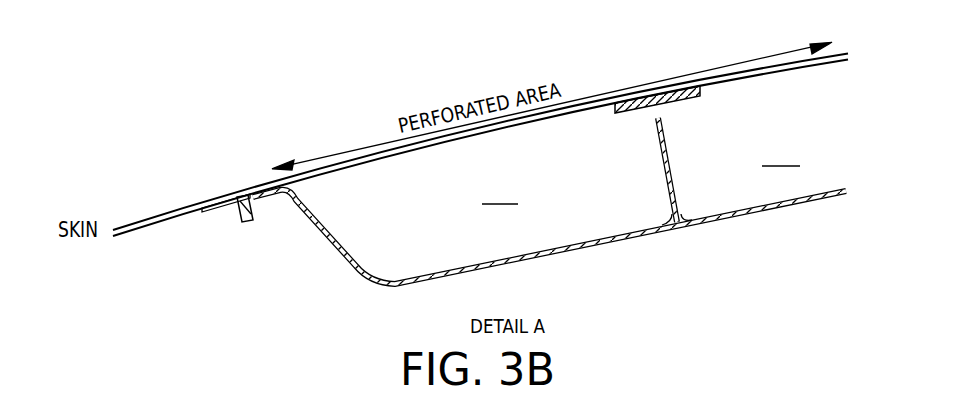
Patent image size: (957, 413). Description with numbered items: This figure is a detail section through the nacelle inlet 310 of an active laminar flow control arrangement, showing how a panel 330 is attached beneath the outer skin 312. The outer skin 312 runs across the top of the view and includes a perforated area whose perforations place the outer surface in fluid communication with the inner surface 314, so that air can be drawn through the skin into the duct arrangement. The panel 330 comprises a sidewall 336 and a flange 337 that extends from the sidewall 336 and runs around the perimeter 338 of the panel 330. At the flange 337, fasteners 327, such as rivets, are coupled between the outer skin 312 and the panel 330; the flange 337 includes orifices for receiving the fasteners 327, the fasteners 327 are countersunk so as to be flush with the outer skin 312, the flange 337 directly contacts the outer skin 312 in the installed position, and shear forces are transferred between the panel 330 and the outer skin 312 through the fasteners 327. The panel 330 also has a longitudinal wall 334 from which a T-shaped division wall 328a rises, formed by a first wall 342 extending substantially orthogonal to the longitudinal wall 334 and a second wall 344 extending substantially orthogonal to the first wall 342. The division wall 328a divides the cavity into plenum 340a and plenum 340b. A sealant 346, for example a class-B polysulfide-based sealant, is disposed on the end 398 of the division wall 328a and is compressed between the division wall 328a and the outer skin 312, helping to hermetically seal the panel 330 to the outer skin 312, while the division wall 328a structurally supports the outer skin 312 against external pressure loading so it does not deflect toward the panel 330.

The nacelle inlet 310 is at (480, 150).
The outer skin 312 is at (480, 150).
The inner surface 314 is at (352, 176).
The fasteners 327 is at (241, 194).
The division wall 328a is at (662, 174).
The panel 330 is at (745, 214).
The longitudinal wall 334 is at (549, 248).
The sidewall 336 is at (549, 248).
The flange 337 is at (227, 214).
The perimeter 338 is at (190, 239).
The plenum 340a is at (500, 193).
The plenum 340b is at (781, 155).
The first wall 342 is at (667, 171).
The second wall 344 is at (689, 90).
The sealant 346 is at (689, 72).
The end 398 is at (660, 100).